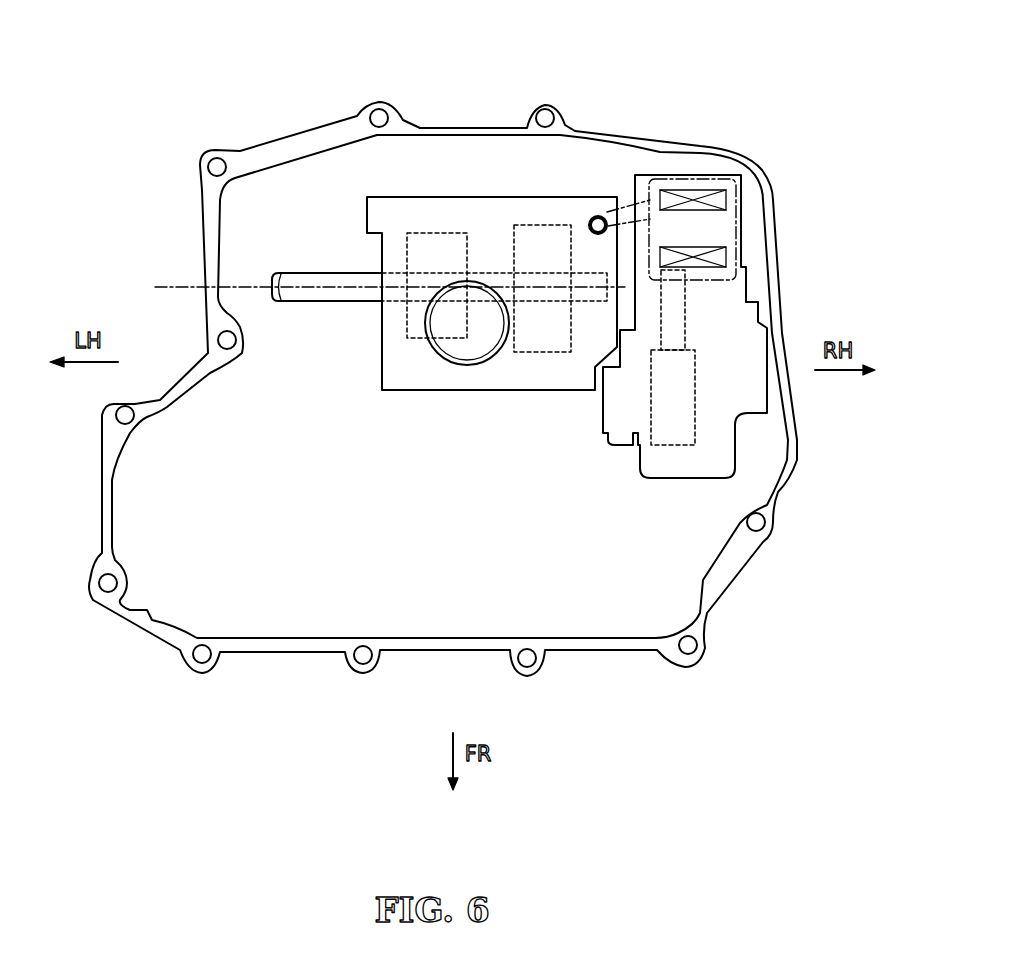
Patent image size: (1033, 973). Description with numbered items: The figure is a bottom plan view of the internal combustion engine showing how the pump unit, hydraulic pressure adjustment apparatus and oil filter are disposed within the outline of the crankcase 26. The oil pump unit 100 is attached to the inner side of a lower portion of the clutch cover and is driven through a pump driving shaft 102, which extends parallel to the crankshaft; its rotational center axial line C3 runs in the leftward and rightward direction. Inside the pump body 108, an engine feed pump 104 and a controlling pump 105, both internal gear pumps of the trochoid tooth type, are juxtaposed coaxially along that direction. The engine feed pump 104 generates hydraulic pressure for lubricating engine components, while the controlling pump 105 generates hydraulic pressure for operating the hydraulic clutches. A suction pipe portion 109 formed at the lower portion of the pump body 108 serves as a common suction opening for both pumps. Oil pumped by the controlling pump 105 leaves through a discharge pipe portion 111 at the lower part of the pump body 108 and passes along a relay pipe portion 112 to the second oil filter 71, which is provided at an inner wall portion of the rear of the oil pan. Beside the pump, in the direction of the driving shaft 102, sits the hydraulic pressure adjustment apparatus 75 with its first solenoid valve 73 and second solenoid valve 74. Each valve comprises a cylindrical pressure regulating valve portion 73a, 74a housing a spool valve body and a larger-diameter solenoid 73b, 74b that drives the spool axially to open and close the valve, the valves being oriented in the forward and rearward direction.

The crankcase 26 is at (270, 148).
The rotational center axial line C3 is at (162, 286).
The oil pump unit 100 is at (470, 209).
The pump body 108 is at (485, 197).
The pump driving shaft 102 is at (320, 302).
The controlling pump 105 is at (428, 233).
The engine feed pump 104 is at (545, 225).
The suction pipe portion 109 is at (448, 360).
The discharge pipe portion 111 is at (592, 218).
The relay pipe portion 112 is at (625, 205).
The hydraulic pressure adjustment apparatus 75 is at (747, 291).
The second oil filter 71 is at (700, 176).
The second solenoid valve 74 is at (578, 443).
The first solenoid valve 73 is at (581, 443).
The pressure regulating valve portion 74a is at (576, 407).
The pressure regulating valve portion 73a is at (660, 313).
The solenoid 74b is at (628, 447).
The solenoid 73b is at (628, 447).